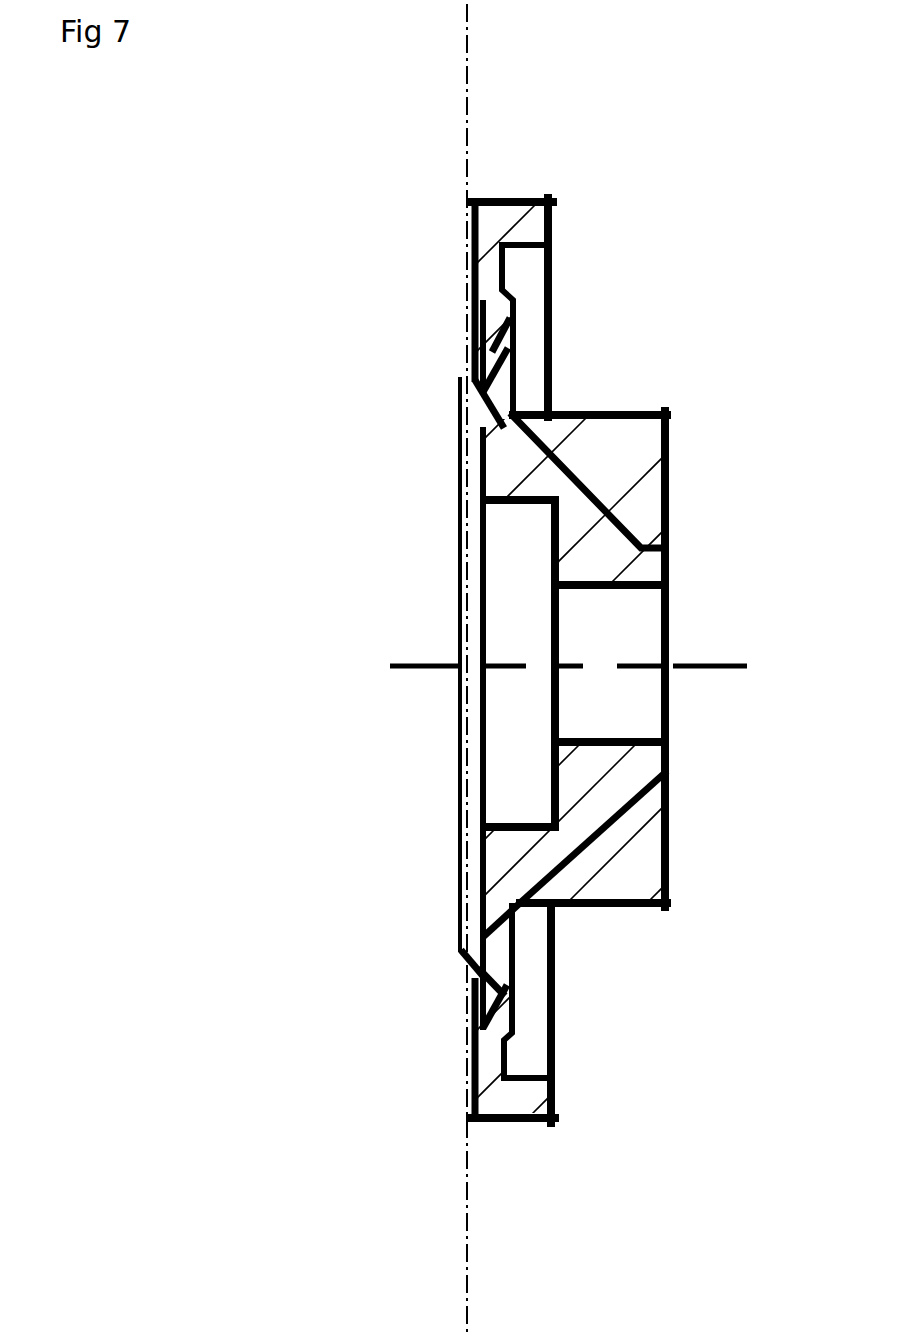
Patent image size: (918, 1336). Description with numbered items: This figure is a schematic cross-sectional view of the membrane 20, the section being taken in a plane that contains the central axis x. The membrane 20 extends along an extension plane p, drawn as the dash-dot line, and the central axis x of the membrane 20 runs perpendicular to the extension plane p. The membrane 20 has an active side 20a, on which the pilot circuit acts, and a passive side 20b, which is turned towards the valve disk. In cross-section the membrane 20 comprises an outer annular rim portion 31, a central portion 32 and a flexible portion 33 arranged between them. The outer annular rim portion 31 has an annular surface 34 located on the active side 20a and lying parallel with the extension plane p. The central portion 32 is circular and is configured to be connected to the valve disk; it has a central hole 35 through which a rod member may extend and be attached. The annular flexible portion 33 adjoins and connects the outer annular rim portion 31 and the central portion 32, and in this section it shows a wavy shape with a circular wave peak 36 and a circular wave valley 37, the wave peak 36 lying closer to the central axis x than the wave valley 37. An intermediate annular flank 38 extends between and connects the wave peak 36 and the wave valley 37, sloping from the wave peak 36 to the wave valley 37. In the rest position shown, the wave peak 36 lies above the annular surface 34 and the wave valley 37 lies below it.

The membrane 20 is at (440, 175).
The active side 20a is at (453, 892).
The passive side 20b is at (557, 261).
The outer annular rim portion 31 is at (467, 212).
The central portion 32 is at (542, 487).
The flexible portion 33 is at (500, 350).
The annular surface 34 is at (498, 219).
The central hole 35 is at (605, 617).
The wave peak 36 is at (462, 388).
The wave valley 37 is at (472, 320).
The intermediate annular flank 38 is at (497, 343).
The extension plane p is at (467, 122).
The central axis x is at (698, 665).